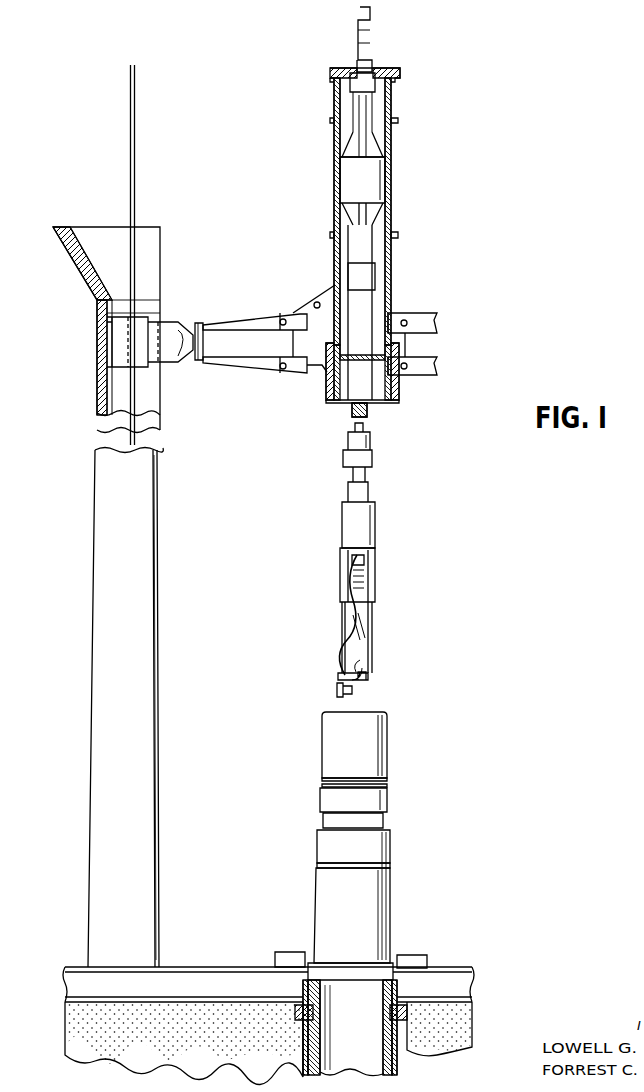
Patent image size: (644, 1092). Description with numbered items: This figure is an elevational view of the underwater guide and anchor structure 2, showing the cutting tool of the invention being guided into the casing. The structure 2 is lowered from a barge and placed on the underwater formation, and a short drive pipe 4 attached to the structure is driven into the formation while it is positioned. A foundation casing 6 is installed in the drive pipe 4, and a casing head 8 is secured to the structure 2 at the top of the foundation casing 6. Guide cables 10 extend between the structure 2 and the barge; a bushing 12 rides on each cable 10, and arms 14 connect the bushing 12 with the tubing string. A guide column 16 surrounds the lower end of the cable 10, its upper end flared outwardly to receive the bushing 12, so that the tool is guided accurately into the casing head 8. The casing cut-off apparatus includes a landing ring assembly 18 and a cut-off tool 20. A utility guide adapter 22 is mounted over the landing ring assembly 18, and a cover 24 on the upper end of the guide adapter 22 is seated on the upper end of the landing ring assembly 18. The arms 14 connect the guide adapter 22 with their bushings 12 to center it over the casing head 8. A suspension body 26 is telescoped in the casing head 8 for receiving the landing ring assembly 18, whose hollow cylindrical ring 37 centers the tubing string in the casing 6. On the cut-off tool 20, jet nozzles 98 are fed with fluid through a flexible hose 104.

The guide and anchor structure 2 is at (230, 960).
The drive pipe 4 is at (404, 1055).
The foundation casing 6 is at (318, 1050).
The casing head 8 is at (370, 907).
The guide cable 10 is at (133, 205).
The bushing 12 is at (137, 330).
The arms 14 is at (248, 372).
The guide column 16 is at (118, 527).
The landing ring assembly 18 is at (360, 310).
The cut-off tool 20 is at (364, 535).
The utility guide adapter 22 is at (393, 103).
The cover 24 is at (385, 62).
The suspension body 26 is at (360, 768).
The hollow cylindrical ring 37 is at (367, 178).
The jet nozzles 98 is at (337, 690).
The flexible hose 104 is at (350, 598).